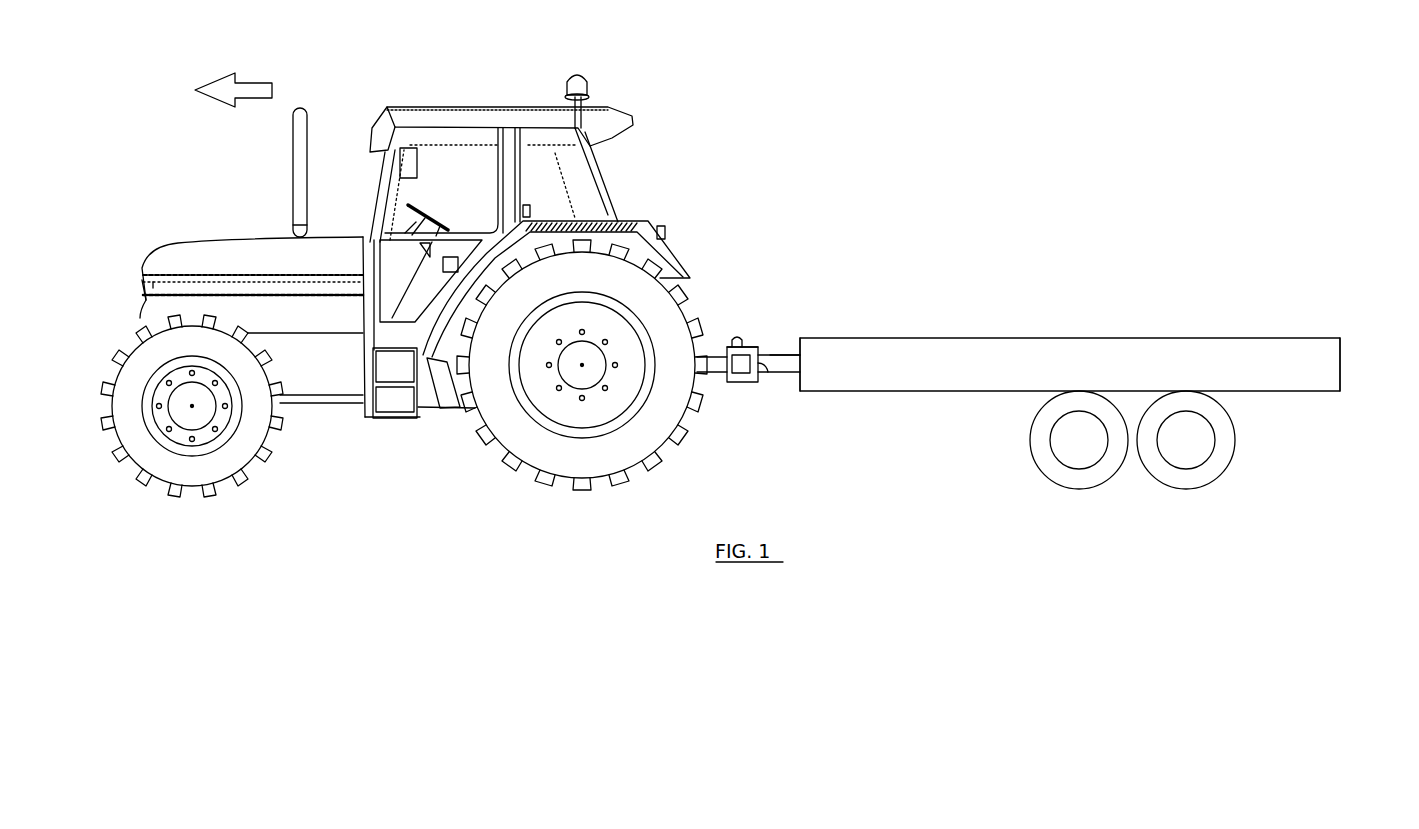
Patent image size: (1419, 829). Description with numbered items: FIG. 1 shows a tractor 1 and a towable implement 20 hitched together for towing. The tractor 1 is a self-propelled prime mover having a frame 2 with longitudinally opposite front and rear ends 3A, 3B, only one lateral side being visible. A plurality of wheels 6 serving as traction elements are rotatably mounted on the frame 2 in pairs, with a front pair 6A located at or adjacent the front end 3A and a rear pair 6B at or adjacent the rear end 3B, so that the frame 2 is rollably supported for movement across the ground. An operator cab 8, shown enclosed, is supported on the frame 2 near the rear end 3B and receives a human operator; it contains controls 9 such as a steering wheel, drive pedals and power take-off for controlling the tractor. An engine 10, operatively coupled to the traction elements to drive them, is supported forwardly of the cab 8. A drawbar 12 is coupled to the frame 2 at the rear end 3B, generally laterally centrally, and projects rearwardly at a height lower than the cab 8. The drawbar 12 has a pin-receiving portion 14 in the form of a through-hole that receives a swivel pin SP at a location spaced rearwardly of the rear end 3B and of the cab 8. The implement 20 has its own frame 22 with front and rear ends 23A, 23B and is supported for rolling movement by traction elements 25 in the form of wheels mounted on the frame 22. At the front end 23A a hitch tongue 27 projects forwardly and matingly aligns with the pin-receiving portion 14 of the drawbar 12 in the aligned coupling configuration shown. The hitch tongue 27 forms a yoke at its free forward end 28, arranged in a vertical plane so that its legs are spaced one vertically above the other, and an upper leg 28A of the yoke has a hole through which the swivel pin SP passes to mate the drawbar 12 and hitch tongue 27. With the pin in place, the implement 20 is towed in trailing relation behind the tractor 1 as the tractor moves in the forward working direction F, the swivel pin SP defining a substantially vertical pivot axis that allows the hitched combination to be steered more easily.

The tractor 1 is at (171, 150).
The forward working direction F is at (248, 86).
The frame 2 is at (307, 405).
The front end 3A is at (148, 324).
The rear end 3B is at (680, 258).
The wheels 6 is at (404, 398).
The front pair of wheels 6A is at (192, 498).
The rear pair of wheels 6B is at (582, 497).
The operator cab 8 is at (447, 105).
The controls 9 is at (430, 216).
The engine 10 is at (255, 260).
The drawbar 12 is at (712, 376).
The pin-receiving portion 14 is at (780, 368).
The towable implement 20 is at (1100, 324).
The frame 22 is at (905, 392).
The front end 23A is at (800, 392).
The rear end 23B is at (1345, 385).
The traction elements 25 is at (1230, 458).
The hitch tongue 27 is at (773, 352).
The free forward end 28 is at (762, 367).
The upper leg 28A is at (752, 342).
The swivel pin SP is at (738, 335).